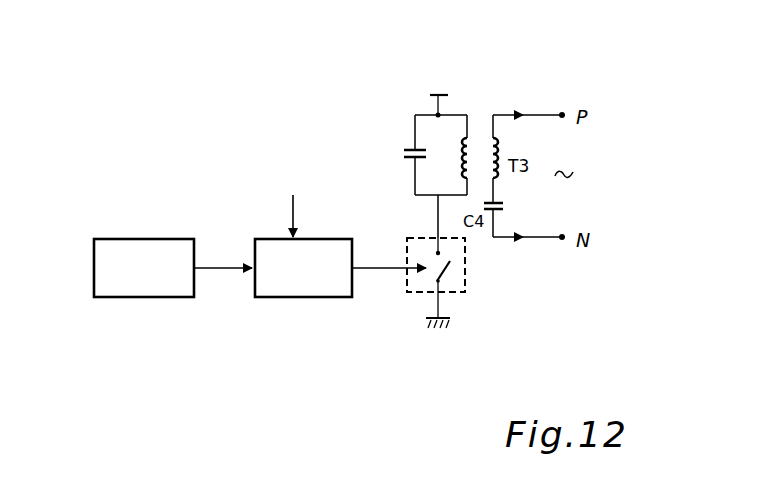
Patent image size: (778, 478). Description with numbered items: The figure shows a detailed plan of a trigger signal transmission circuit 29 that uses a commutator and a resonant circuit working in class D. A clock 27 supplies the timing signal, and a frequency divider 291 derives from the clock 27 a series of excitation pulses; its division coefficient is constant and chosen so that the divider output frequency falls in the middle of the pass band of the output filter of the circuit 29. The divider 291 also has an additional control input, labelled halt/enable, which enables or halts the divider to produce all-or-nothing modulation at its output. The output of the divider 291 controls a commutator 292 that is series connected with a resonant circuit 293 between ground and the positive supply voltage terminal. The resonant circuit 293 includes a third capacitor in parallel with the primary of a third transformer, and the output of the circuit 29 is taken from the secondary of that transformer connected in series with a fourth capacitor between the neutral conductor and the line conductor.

The clock 27 is at (138, 299).
The circuit 29 is at (268, 140).
The frequency divider 291 is at (300, 299).
The commutator 292 is at (465, 285).
The resonant circuit 293 is at (427, 133).